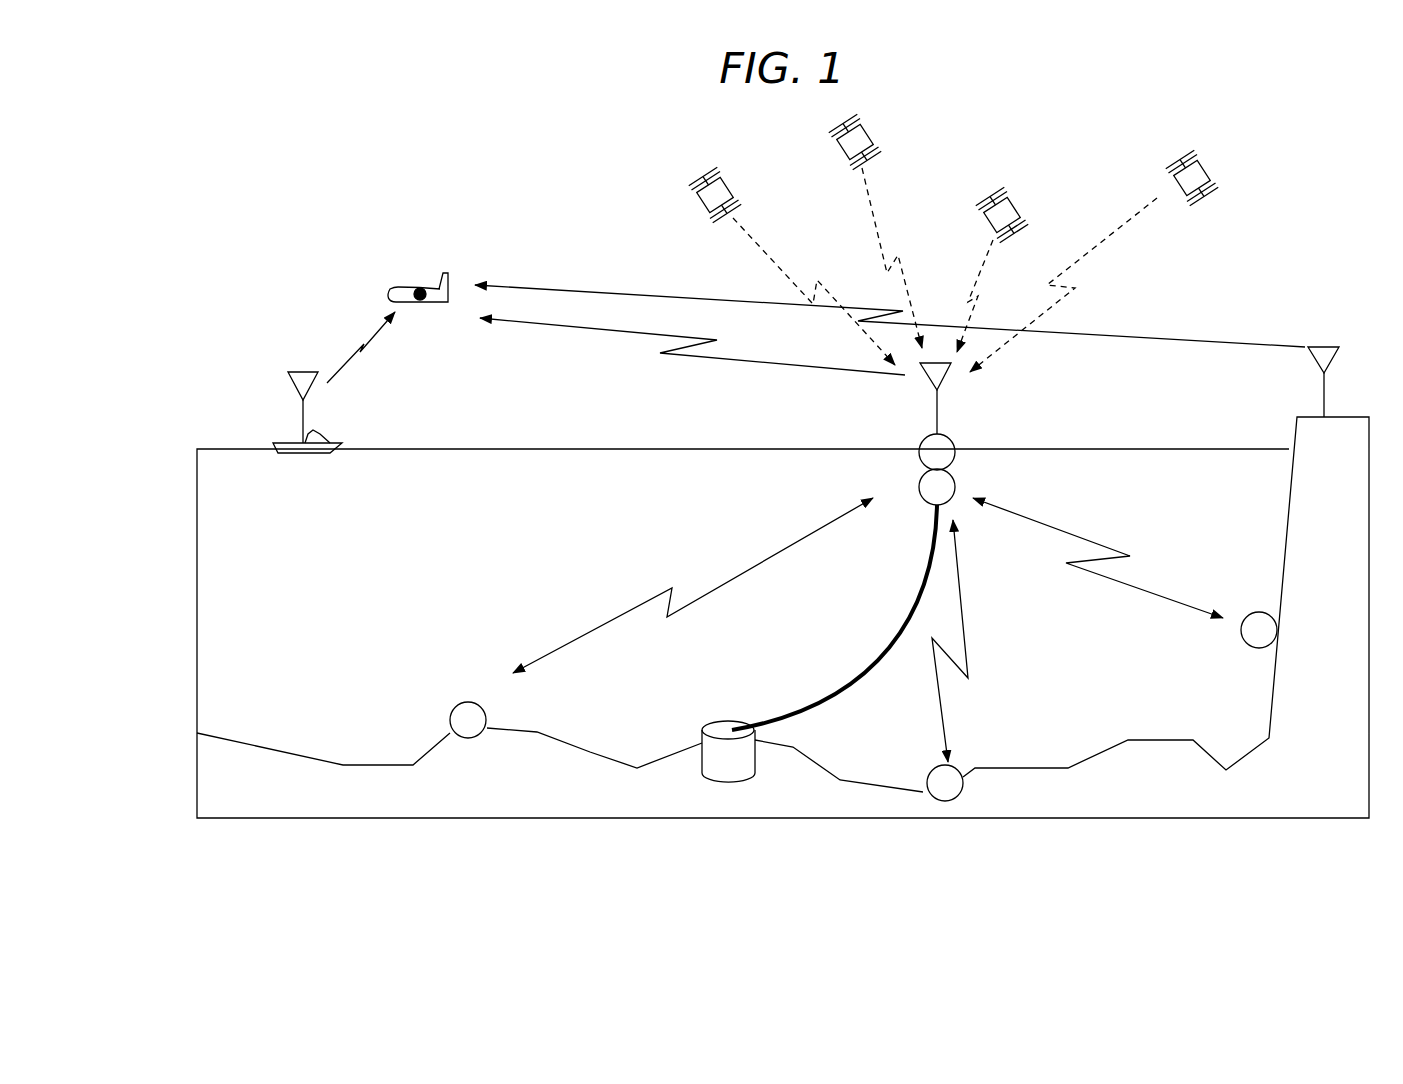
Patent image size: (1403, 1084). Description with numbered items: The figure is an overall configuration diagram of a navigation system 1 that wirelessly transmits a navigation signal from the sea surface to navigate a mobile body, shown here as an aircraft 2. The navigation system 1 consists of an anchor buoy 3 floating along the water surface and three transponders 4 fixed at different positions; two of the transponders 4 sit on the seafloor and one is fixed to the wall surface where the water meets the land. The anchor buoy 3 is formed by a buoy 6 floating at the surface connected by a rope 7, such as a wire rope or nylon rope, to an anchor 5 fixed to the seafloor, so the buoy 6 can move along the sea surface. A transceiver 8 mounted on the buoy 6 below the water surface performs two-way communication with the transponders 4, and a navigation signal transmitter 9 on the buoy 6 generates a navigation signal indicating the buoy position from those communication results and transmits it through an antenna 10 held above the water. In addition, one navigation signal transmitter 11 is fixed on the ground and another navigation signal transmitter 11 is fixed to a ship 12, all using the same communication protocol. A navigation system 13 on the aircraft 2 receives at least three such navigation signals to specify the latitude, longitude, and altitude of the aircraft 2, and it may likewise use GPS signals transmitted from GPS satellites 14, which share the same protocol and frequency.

The navigation system 1 is at (1087, 397).
The aircraft 2 is at (404, 287).
The anchor buoy 3 is at (931, 434).
The transponder 4 is at (452, 710).
The anchor 5 is at (702, 742).
The buoy 6 is at (935, 452).
The rope 7 is at (857, 688).
The transceiver 8 is at (918, 487).
The navigation signal transmitter 9 is at (949, 397).
The antenna 10 is at (945, 380).
The navigation signal transmitter 11 is at (303, 372).
The ship 12 is at (273, 443).
The navigation system 13 is at (422, 289).
The GPS satellite 14 is at (700, 203).